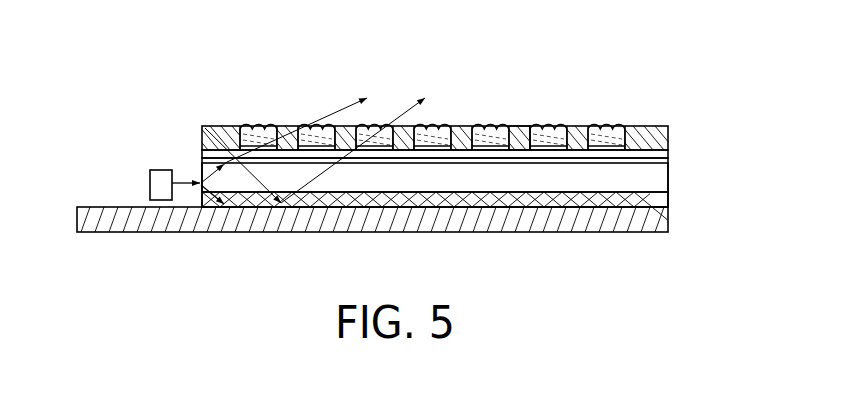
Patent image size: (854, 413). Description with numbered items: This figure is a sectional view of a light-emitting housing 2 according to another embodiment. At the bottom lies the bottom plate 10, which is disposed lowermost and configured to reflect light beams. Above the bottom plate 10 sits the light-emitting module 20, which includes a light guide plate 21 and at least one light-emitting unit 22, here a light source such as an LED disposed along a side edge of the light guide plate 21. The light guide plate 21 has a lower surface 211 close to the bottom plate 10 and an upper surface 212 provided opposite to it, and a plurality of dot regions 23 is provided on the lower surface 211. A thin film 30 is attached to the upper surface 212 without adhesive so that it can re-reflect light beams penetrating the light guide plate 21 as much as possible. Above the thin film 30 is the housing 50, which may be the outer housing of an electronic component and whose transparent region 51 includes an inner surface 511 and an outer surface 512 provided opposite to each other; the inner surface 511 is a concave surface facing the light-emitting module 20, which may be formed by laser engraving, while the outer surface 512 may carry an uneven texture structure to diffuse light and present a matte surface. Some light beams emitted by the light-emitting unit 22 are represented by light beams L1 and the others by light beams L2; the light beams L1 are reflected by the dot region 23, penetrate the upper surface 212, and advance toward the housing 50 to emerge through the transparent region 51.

The light-emitting housing 2 is at (67, 98).
The bottom plate 10 is at (87, 207).
The light-emitting module 20 is at (193, 70).
The light guide plate 21 is at (460, 145).
The light-emitting unit 22 is at (155, 184).
The dot region 23 is at (566, 207).
The thin film 30 is at (643, 151).
The housing 50 is at (468, 96).
The transparent region 51 is at (537, 96).
The inner surface 511 is at (517, 130).
The outer surface 512 is at (558, 130).
The lower surface 211 is at (672, 200).
The upper surface 212 is at (670, 166).
The light beam L1 is at (295, 128).
The light beam L2 is at (325, 138).